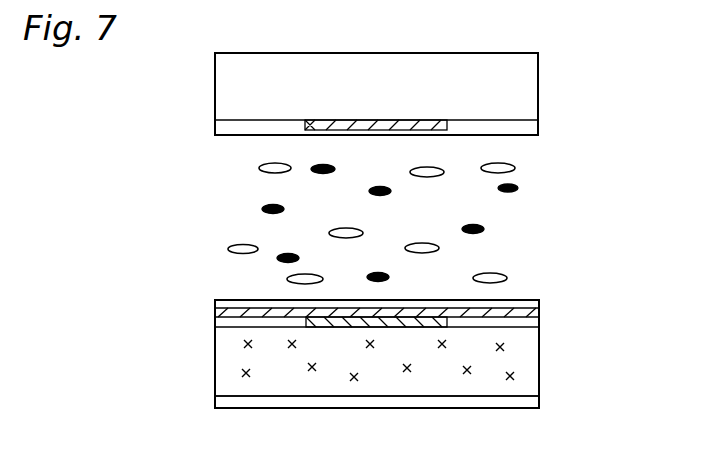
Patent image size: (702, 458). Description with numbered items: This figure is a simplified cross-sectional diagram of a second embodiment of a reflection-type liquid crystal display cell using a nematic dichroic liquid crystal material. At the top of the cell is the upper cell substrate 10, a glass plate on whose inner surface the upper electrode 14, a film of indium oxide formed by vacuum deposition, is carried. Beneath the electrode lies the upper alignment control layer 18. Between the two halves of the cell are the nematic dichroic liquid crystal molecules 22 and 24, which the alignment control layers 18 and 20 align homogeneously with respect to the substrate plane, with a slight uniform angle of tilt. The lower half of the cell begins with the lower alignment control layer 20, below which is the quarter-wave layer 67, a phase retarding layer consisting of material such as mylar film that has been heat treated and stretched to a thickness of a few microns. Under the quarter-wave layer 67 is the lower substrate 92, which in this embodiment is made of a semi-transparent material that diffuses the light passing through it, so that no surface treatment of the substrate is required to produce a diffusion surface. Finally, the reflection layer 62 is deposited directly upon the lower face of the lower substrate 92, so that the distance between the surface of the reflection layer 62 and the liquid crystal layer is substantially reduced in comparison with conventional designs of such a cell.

The cell substrate 10 is at (215, 90).
The alignment control layer 18 is at (213, 128).
The upper electrode 14 is at (305, 131).
The nematic dichroic liquid crystal molecule 22 is at (262, 173).
The nematic dichroic liquid crystal molecule 24 is at (265, 212).
The alignment control layer 20 is at (525, 305).
The quarter-wave layer 67 is at (220, 313).
The lower substrate 92 is at (225, 364).
The reflection layer 62 is at (222, 403).